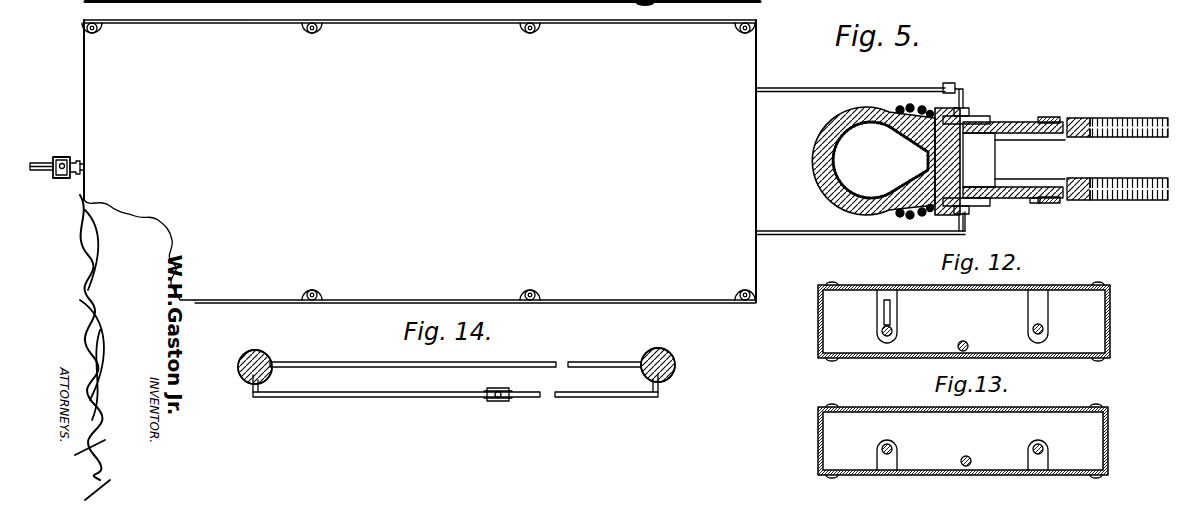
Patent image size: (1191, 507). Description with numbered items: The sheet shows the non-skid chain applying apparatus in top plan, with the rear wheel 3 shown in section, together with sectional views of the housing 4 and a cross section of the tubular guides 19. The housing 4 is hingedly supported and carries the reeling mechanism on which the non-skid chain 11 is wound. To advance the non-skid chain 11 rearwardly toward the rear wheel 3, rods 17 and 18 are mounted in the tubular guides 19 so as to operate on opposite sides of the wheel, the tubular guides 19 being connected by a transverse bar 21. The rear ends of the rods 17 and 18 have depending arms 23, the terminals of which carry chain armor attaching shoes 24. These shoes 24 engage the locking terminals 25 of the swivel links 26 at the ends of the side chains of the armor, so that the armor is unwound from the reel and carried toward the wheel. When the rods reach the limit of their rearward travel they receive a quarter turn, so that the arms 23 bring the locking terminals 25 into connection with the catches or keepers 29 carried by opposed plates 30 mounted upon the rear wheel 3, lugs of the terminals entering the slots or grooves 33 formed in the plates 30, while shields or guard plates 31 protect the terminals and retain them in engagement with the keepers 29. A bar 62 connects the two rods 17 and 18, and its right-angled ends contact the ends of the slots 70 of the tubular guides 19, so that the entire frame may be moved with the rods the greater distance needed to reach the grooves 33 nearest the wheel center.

In FIG. 5, the rear wheel 3 is at (1133, 130).
In FIG. 5, the housing 4 is at (84, 102).
In FIG. 12, the housing 4 is at (818, 318).
In FIG. 13, the housing 4 is at (1108, 418).
In FIG. 5, the non-skid chain 11 is at (906, 107).
In FIG. 5, the rod 17 is at (796, 234).
In FIG. 14, the rod 17 is at (266, 396).
In FIG. 5, the rod 18 is at (808, 88).
In FIG. 14, the rod 18 is at (654, 396).
In FIG. 14, the tubular guides 19 is at (266, 352).
In FIG. 14, the transverse bar 21 is at (580, 363).
In FIG. 5, the depending arms 23 is at (966, 93).
In FIG. 5, the chain armor attaching shoes 24 is at (973, 110).
In FIG. 5, the locking terminals 25 is at (990, 120).
In FIG. 5, the swivel links 26 is at (930, 165).
In FIG. 5, the catches or keepers 29 is at (1052, 117).
In FIG. 5, the opposed plates 30 is at (1030, 121).
In FIG. 5, the shields or guard plates 31 is at (1050, 204).
In FIG. 5, the slots or grooves 33 is at (1050, 141).
In FIG. 14, the bar 62 is at (400, 398).
In FIG. 14, the slots 70 is at (250, 383).